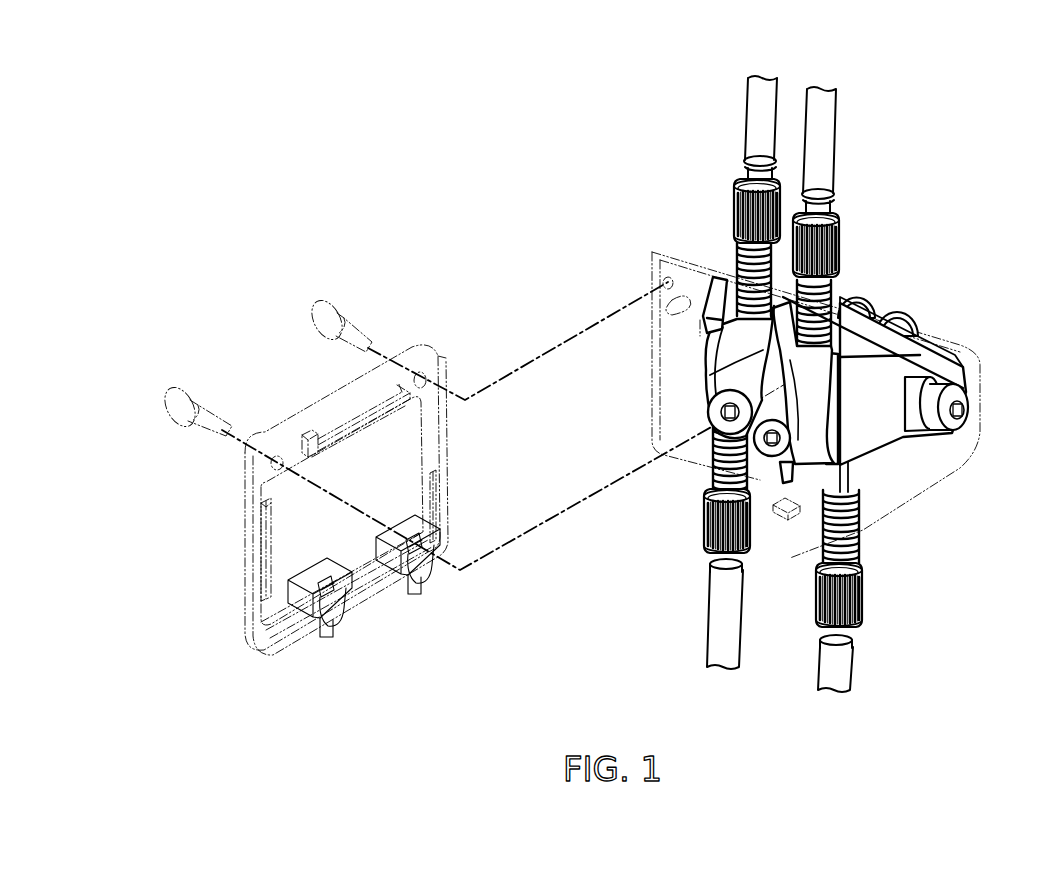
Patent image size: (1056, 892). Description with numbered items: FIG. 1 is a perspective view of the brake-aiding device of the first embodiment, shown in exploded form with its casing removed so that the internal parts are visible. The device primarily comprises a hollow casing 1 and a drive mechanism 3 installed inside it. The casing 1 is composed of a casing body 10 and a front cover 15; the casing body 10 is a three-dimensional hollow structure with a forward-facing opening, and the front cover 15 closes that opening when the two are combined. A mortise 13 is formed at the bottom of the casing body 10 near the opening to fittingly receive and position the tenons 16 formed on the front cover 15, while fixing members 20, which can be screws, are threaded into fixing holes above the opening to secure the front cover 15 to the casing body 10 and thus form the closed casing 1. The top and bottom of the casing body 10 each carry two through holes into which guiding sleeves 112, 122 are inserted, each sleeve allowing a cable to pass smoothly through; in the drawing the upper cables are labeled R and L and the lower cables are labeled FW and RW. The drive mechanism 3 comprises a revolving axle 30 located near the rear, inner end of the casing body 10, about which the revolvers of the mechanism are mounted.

The casing 1 is at (587, 251).
The drive mechanism 3 is at (688, 478).
The casing body 10 is at (650, 249).
The mortise 13 is at (787, 515).
The front cover 15 is at (426, 347).
The tenons 16 is at (397, 588).
The fixing members 20 is at (350, 330).
The revolving axle 30 is at (945, 422).
The guiding sleeves 112 is at (732, 201).
The guiding sleeves 122 is at (703, 550).
The right hose R is at (762, 102).
The left hose L is at (820, 111).
The front wheel hose FW is at (718, 646).
The rear wheel hose RW is at (840, 674).